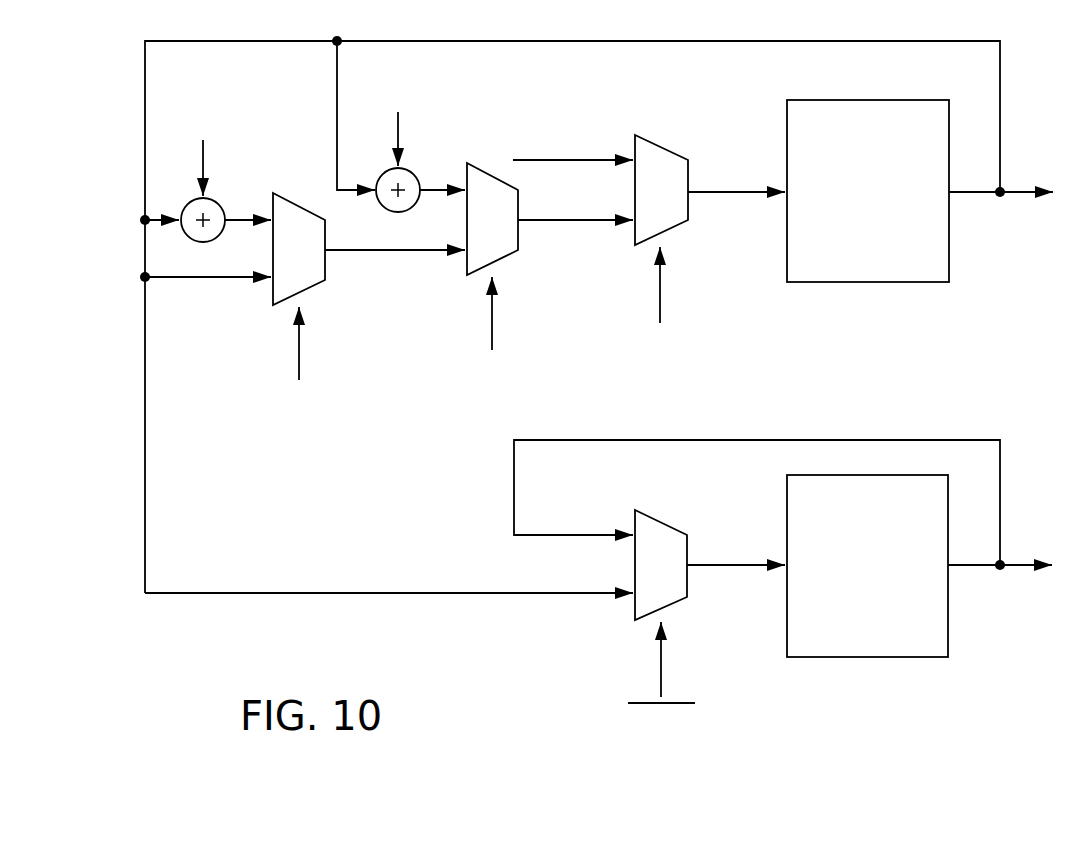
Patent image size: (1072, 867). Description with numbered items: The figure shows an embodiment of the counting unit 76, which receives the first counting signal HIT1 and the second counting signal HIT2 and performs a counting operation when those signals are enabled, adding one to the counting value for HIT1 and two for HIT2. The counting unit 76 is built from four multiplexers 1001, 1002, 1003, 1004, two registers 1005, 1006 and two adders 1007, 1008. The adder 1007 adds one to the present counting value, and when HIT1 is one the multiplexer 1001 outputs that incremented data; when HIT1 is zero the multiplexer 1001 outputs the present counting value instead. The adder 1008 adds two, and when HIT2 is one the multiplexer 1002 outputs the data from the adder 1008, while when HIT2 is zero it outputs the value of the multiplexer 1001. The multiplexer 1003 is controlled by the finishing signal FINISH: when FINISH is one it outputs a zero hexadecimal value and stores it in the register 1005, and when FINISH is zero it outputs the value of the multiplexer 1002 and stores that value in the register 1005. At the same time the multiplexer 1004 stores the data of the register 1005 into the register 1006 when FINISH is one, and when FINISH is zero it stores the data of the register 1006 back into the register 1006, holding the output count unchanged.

The counting unit 76 is at (128, 658).
The multiplexer 1001 is at (316, 268).
The multiplexer 1002 is at (510, 240).
The multiplexer 1003 is at (680, 210).
The multiplexer 1004 is at (680, 585).
The register 1005 is at (869, 275).
The register 1006 is at (869, 648).
The adder 1007 is at (215, 210).
The adder 1008 is at (410, 180).